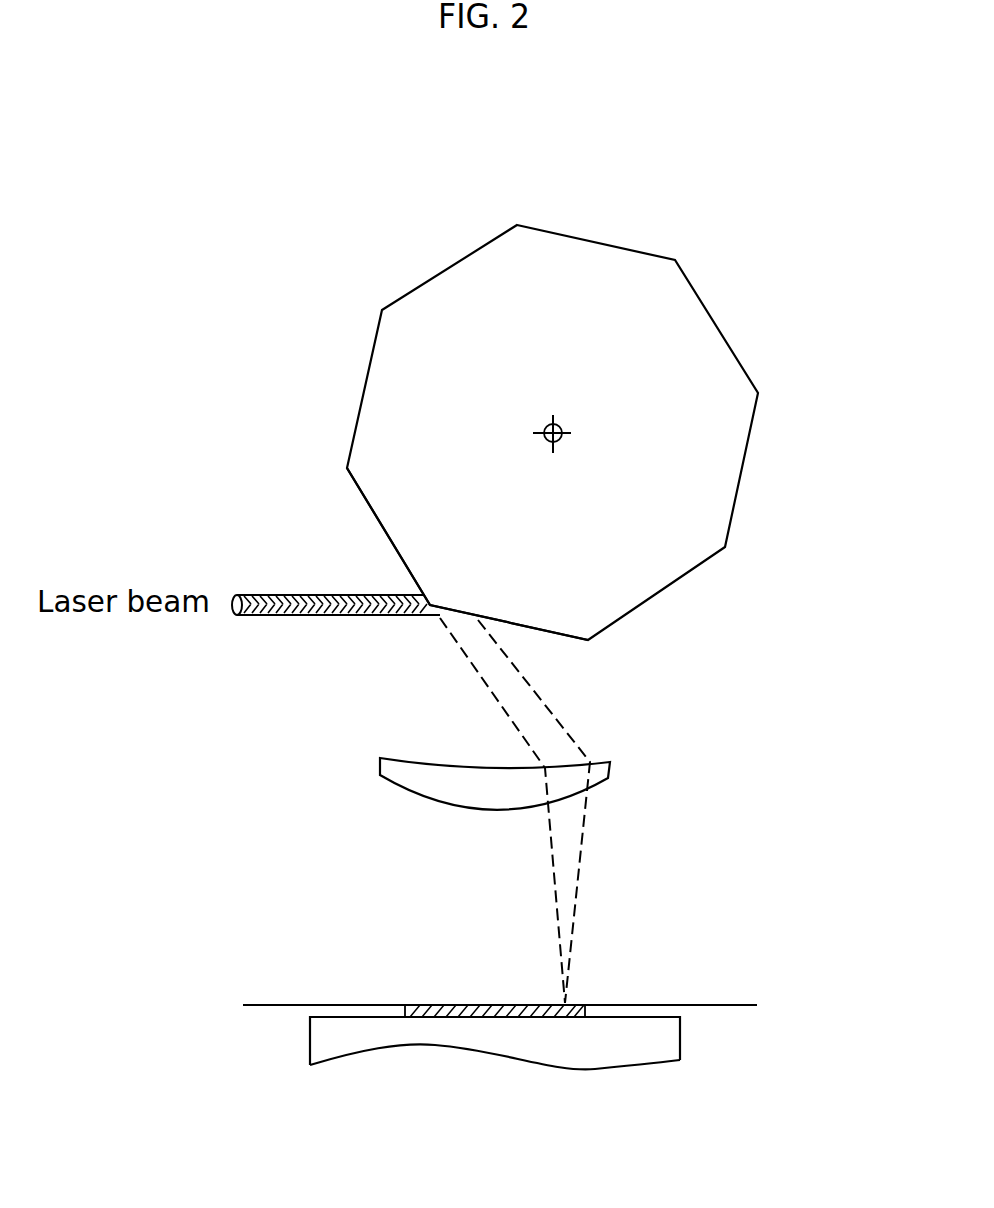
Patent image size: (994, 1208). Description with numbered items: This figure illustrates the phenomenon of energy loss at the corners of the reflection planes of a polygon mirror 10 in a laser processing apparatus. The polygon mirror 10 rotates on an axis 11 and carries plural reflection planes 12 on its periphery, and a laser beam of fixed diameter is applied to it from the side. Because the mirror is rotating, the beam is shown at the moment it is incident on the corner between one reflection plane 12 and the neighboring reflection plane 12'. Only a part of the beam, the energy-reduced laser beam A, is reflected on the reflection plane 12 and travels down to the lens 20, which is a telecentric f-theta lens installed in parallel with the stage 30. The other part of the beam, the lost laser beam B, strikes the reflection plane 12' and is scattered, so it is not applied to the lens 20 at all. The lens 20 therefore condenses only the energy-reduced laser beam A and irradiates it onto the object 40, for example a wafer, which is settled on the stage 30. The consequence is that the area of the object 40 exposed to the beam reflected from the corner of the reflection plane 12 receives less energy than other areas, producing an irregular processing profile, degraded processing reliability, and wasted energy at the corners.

The polygon mirror 10 is at (459, 234).
The axis 11 is at (571, 428).
The reflection plane 12 is at (554, 667).
The reflection plane 12' is at (319, 527).
The lens 20 is at (412, 792).
The stage 30 is at (663, 1045).
The object 40 is at (458, 1003).
The energy-reduced laser beam A is at (288, 618).
The lost laser beam B is at (273, 594).